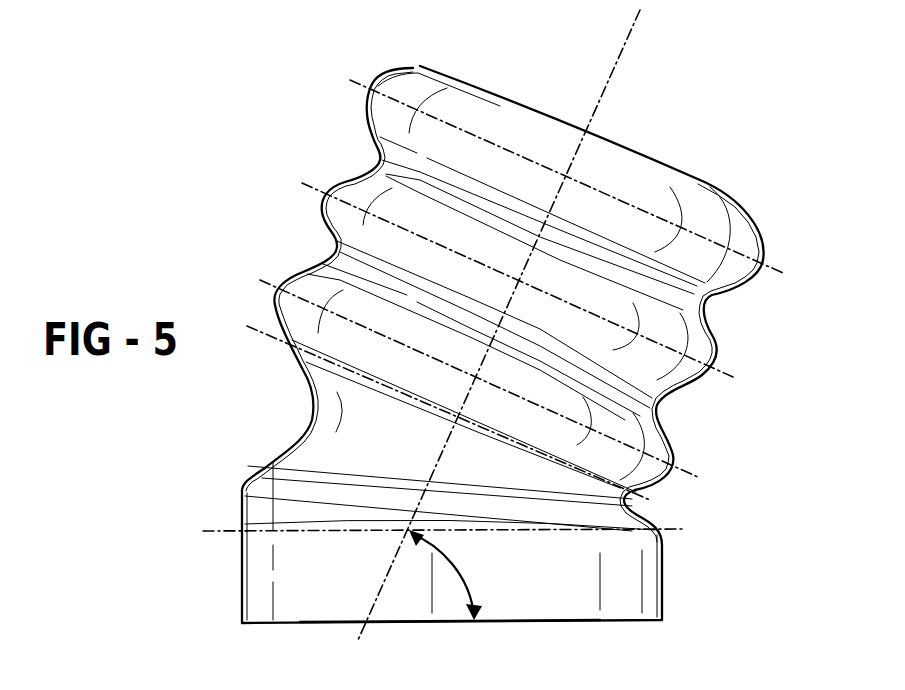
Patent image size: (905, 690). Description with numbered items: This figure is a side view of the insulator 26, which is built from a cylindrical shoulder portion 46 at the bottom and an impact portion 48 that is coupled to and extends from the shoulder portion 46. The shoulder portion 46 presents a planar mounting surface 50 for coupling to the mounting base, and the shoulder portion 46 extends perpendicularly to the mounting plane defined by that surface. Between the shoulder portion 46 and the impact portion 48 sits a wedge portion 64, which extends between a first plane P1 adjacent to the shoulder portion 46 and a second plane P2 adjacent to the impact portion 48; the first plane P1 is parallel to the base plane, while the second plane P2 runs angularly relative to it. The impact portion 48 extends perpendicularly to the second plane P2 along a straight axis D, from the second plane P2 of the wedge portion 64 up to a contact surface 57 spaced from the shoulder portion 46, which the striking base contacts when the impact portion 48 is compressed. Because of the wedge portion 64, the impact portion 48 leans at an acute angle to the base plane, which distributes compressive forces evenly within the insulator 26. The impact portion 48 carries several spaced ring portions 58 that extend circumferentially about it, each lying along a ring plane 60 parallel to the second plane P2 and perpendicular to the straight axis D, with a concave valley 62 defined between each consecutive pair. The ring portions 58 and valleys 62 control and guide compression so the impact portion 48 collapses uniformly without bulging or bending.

The insulator 26 is at (258, 540).
The shoulder portion 46 is at (260, 608).
The impact portion 48 is at (342, 220).
The mounting surface 50 is at (458, 624).
The contact surface 57 is at (533, 110).
The ring portions 58 is at (745, 265).
The ring planes 60 is at (352, 80).
The valley 62 is at (712, 300).
The wedge portion 64 is at (262, 487).
The straight axis D is at (633, 27).
The first plane P1 is at (683, 529).
The second plane P2 is at (650, 500).